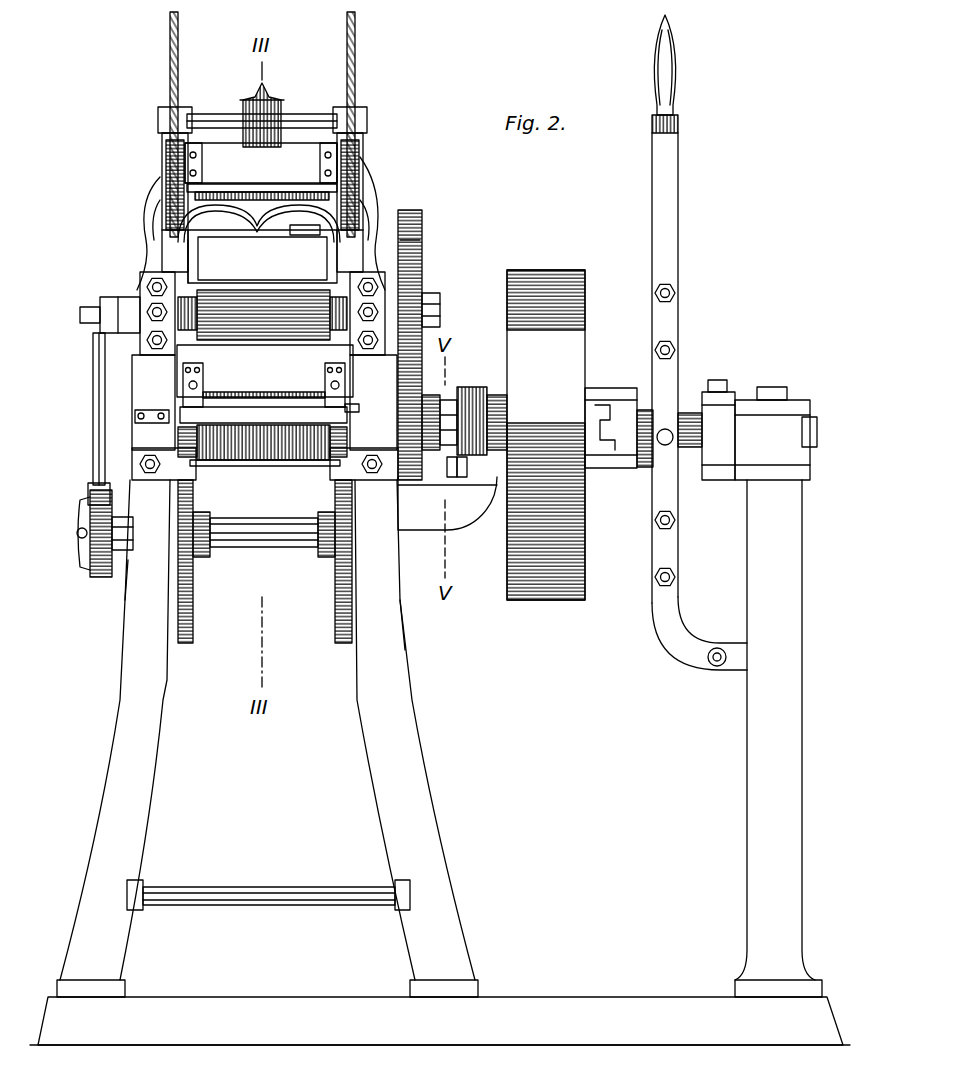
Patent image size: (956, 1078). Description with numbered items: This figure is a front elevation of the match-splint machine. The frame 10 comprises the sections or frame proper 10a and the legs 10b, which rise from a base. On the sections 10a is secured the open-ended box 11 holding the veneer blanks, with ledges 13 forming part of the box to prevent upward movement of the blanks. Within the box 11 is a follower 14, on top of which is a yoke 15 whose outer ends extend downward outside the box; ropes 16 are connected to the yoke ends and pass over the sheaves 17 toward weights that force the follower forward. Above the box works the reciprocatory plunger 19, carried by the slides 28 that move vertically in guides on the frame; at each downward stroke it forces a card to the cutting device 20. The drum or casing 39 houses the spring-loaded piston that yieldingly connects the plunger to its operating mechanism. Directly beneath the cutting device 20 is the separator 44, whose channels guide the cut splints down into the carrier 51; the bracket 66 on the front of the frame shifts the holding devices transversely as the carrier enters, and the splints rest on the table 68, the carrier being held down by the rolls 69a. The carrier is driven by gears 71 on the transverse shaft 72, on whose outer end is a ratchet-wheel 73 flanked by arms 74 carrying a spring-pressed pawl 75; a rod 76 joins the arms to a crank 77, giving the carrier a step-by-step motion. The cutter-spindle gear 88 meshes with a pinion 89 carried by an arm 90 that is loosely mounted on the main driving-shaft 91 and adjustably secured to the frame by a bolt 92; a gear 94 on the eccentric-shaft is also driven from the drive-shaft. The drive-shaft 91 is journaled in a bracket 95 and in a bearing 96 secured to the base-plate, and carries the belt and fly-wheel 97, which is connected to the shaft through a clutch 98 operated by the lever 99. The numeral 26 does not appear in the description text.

The frame 10 is at (440, 564).
The sections or frame proper 10a is at (373, 203).
The legs 10b is at (266, 636).
The open-ended box 11 is at (192, 258).
The ledges 13 is at (316, 218).
The follower 14 is at (262, 256).
The yoke 15 is at (165, 232).
The ropes 16 is at (178, 52).
The sheaves 17 is at (160, 154).
The reciprocatory plunger 19 is at (261, 171).
The cutting device 20 is at (264, 334).
The bolt 26 is at (155, 313).
The slides 28 is at (313, 143).
The drum or casing 39 is at (243, 100).
The separator 44 is at (200, 356).
The carrier 51 is at (280, 413).
The bracket 66 is at (152, 411).
The table 68 is at (256, 462).
The rolls 69a is at (337, 400).
The gears 71 is at (190, 640).
The transverse shaft 72 is at (272, 547).
The ratchet-wheel 73 is at (101, 580).
The arm 74 is at (84, 563).
The spring-pressed pawl 75 is at (92, 487).
The rod 76 is at (96, 430).
The crank 77 is at (105, 303).
The gear 88 is at (414, 272).
The pinion 89 is at (428, 415).
The arm 90 is at (432, 485).
The main driving-shaft 91 is at (692, 452).
The bolt 92 is at (455, 477).
The gear 94 is at (413, 210).
The bracket 95 is at (460, 520).
The bearing 96 is at (752, 580).
The belt and fly-wheel 97 is at (540, 278).
The clutch 98 is at (614, 400).
The lever 99 is at (680, 252).